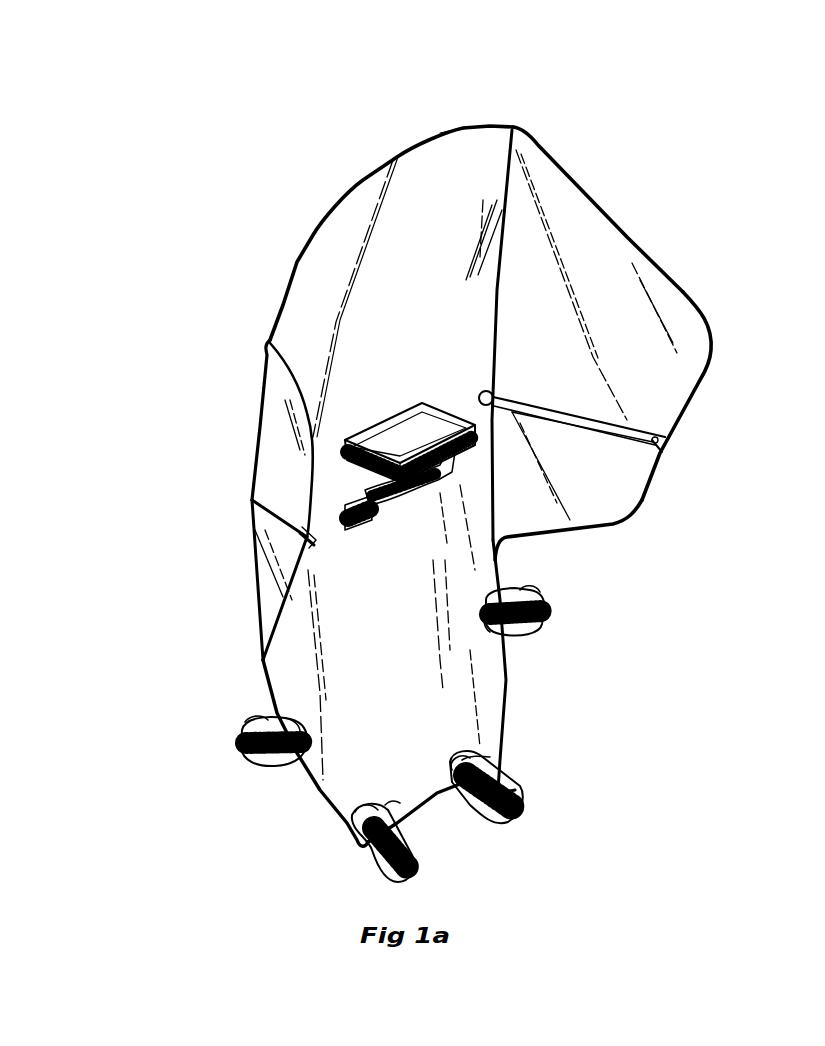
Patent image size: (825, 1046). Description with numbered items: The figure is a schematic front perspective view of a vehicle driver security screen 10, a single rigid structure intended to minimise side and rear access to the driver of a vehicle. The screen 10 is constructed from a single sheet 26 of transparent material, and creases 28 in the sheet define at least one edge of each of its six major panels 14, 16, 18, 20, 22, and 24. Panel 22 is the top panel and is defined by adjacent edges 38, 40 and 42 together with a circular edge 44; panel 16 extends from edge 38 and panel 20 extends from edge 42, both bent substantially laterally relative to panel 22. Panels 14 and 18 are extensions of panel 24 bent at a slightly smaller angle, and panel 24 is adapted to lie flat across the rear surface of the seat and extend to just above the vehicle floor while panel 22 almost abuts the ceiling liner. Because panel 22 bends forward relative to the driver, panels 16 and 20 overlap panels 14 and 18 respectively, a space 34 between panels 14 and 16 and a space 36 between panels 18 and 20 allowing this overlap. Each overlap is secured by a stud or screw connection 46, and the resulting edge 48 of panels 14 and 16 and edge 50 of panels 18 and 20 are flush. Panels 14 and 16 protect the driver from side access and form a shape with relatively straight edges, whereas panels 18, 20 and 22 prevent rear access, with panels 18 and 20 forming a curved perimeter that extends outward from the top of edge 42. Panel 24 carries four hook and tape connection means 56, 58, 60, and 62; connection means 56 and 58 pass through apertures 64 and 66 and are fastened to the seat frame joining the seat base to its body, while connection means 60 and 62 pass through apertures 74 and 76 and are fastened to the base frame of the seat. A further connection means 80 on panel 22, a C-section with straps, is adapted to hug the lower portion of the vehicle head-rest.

The vehicle driver security screen 10 is at (340, 142).
The panel 14 is at (595, 503).
The panel 16 is at (603, 257).
The panel 18 is at (267, 612).
The panel 20 is at (280, 388).
The panel 22 is at (459, 150).
The panel 24 is at (480, 700).
The single sheet 26 is at (693, 300).
The creases 28 is at (513, 163).
The space 34 is at (493, 393).
The space 36 is at (247, 507).
The edge 38 is at (493, 290).
The edge 40 is at (320, 467).
The edge 42 is at (250, 463).
The circular edge 44 is at (320, 219).
The stud or screw connection 46 is at (293, 540).
The edge 48 is at (660, 435).
The edge 50 is at (318, 540).
The connection means 56 is at (540, 617).
The connection means 58 is at (260, 762).
The connection means 60 is at (520, 790).
The connection means 62 is at (380, 863).
The aperture 64 is at (487, 627).
The aperture 66 is at (300, 733).
The aperture 74 is at (488, 760).
The aperture 76 is at (378, 805).
The connection means 80 is at (397, 417).